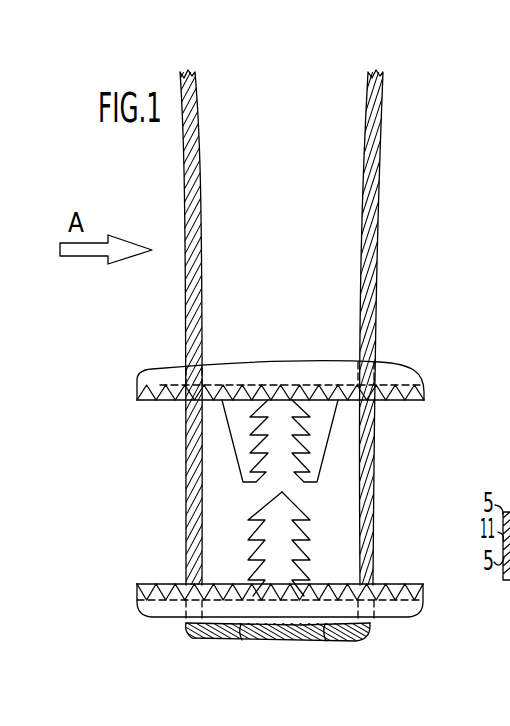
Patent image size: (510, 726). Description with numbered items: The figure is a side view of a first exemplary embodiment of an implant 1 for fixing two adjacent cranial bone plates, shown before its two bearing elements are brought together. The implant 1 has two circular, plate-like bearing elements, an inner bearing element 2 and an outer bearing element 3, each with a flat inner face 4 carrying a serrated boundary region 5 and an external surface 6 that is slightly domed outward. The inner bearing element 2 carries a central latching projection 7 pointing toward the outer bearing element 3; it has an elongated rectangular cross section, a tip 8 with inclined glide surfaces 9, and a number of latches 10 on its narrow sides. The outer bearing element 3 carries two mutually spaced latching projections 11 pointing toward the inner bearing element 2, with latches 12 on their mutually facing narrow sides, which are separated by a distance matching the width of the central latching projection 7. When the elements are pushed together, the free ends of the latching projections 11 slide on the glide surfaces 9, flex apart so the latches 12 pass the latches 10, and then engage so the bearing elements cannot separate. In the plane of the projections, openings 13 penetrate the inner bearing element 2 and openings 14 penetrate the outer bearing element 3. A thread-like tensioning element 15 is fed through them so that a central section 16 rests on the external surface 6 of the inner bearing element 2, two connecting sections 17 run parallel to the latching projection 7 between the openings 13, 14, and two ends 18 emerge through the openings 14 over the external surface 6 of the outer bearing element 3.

The implant 1 is at (410, 350).
The inner bearing element 2 is at (150, 492).
The outer bearing element 3 is at (432, 368).
The inner face 4 is at (386, 402).
The serrated boundary region 5 is at (156, 402).
The external surface 6 is at (302, 361).
The central latching projection 7 is at (325, 556).
The tip 8 is at (290, 493).
The inclined glide surfaces 9 is at (262, 518).
The latches 10 is at (252, 552).
The latching projections 11 is at (224, 453).
The latches 12 is at (266, 434).
The openings 13 is at (186, 634).
The openings 14 is at (185, 347).
The thread-like tensioning element 15 is at (391, 266).
The central section 16 is at (332, 645).
The connecting sections 17 is at (375, 464).
The ends 18 is at (385, 124).